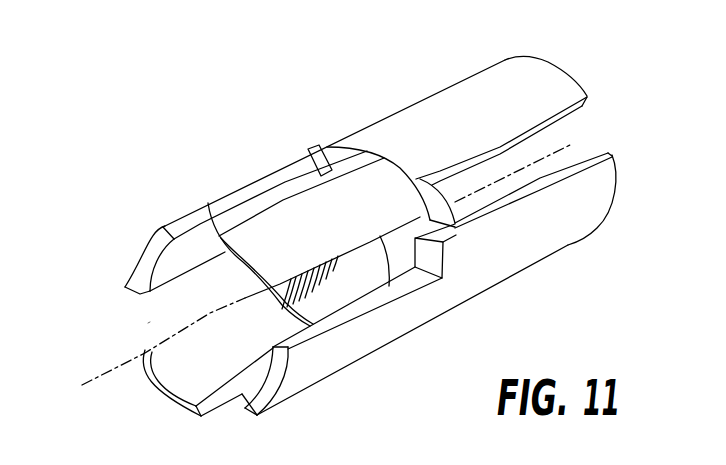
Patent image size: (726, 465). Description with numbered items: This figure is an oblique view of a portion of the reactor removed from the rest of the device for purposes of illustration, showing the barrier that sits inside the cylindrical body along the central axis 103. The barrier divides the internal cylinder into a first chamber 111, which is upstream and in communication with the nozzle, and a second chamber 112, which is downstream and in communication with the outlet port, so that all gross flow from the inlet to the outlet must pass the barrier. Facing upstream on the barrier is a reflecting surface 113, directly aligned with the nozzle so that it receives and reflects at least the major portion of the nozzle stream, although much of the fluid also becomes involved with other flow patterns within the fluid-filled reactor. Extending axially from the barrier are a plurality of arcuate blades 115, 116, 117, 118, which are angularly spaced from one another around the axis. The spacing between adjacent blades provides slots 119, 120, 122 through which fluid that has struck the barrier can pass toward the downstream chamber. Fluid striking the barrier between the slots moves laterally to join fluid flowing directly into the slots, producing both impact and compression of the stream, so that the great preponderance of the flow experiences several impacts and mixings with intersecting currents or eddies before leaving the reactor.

The central axis 103 is at (98, 376).
The first chamber 111 is at (188, 216).
The second chamber 112 is at (563, 112).
The reflecting surface 113 is at (363, 280).
The arcuate blade 115 is at (153, 288).
The arcuate blade 116 is at (208, 203).
The arcuate blade 117 is at (259, 408).
The arcuate blade 118 is at (195, 413).
The slot 119 is at (123, 281).
The slot 120 is at (308, 157).
The slot 122 is at (148, 323).